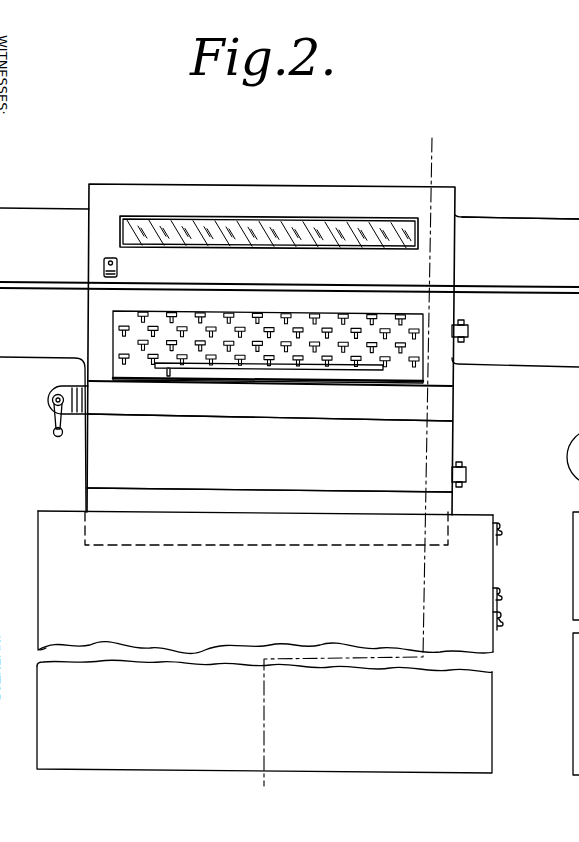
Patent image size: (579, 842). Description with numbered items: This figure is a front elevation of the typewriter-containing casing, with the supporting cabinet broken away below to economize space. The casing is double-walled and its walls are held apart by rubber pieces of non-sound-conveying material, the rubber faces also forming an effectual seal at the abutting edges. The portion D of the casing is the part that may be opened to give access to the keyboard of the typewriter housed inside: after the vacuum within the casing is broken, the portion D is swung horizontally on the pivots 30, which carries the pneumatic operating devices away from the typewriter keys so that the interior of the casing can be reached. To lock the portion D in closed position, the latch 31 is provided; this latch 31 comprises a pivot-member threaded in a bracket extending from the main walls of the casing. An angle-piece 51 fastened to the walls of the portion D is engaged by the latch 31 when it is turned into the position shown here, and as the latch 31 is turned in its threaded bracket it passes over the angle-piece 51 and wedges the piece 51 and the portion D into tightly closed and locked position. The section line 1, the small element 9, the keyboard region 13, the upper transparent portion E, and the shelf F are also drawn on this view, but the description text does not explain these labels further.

The section line 1- 1 is at (458, 146).
The margin stop / indicator 9 is at (120, 271).
The keyboard 13 is at (417, 349).
The pivots 30 is at (468, 331).
The latch 31 is at (53, 395).
The angle-piece 51 is at (72, 385).
The casing portion D is at (107, 450).
The paper table / window E is at (270, 228).
The shelf F is at (524, 228).